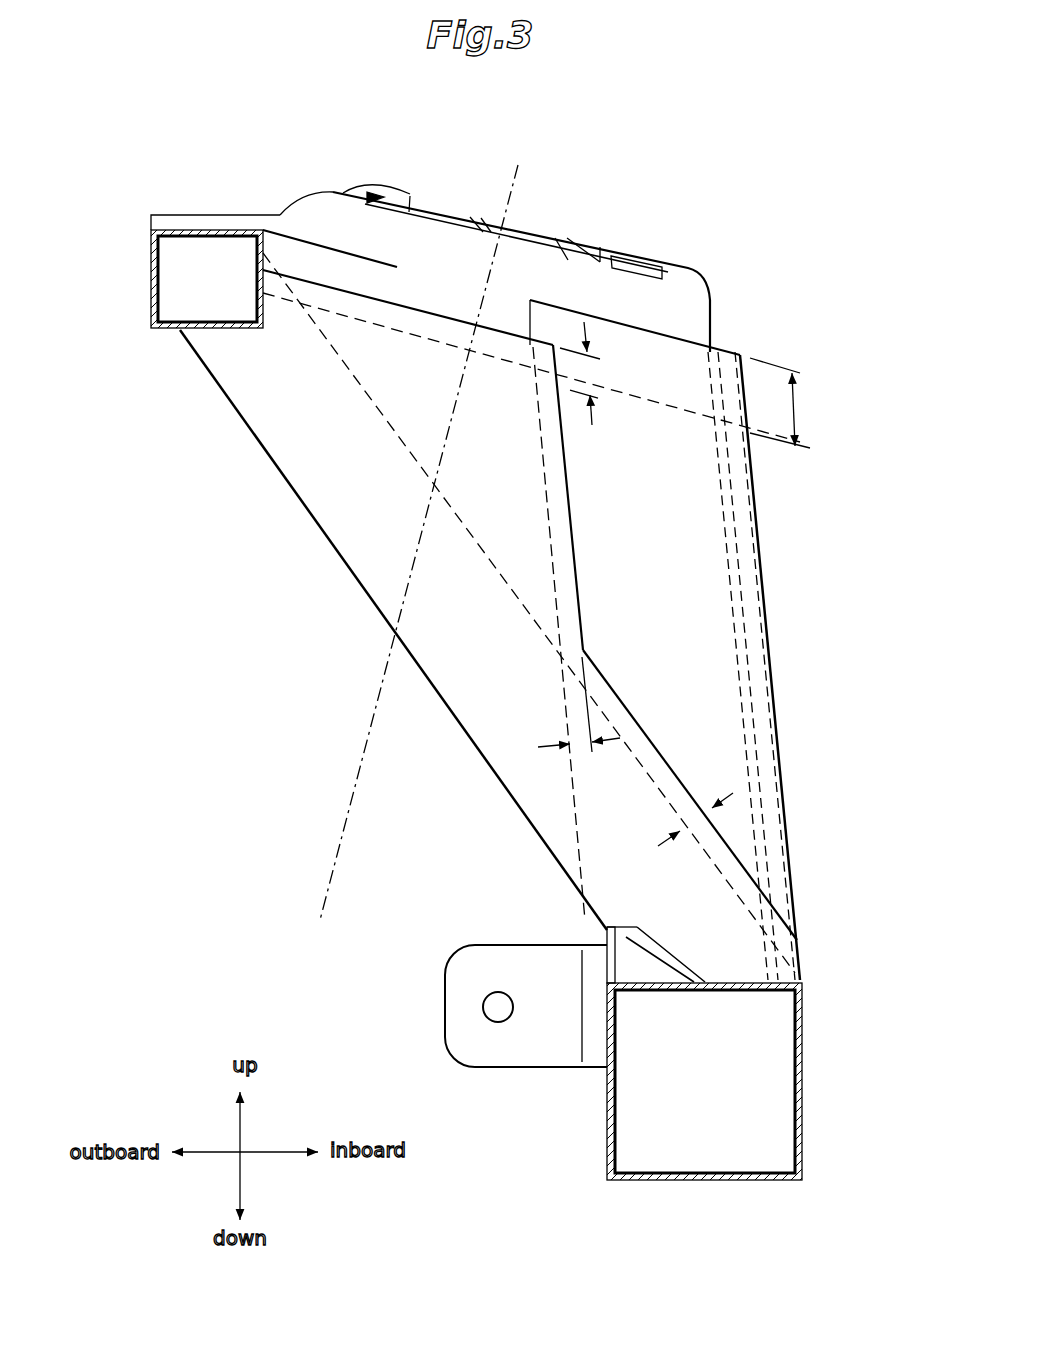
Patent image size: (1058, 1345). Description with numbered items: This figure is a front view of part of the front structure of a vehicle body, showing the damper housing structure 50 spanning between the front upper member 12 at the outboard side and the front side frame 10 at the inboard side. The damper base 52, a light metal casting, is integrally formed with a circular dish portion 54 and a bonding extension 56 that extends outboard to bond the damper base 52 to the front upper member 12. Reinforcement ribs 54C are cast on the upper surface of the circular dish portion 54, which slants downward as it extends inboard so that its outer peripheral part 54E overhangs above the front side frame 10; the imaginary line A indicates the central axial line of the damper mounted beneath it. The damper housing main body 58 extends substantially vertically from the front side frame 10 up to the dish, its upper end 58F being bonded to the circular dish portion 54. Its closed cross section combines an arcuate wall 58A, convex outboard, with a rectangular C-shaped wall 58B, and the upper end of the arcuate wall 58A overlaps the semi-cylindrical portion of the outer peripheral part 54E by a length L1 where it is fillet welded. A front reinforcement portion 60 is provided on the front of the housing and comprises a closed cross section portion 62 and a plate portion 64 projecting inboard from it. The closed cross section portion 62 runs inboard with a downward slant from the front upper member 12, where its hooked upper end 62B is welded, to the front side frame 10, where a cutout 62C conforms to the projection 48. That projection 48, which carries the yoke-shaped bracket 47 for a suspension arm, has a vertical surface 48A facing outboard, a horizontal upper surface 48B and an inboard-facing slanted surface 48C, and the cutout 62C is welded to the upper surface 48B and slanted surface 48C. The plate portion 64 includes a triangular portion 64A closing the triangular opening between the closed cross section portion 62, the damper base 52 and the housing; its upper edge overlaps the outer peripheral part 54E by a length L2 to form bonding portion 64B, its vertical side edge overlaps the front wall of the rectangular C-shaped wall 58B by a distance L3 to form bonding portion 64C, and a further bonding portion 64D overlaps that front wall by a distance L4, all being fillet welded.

The front side frame 10 is at (805, 1062).
The front upper member 12 is at (147, 288).
The bracket 47 is at (548, 1057).
The projection 48 is at (637, 926).
The vertical surface 48A is at (604, 952).
The upper surface 48B is at (622, 924).
The slanted surface 48C is at (664, 940).
The damper housing structure 50 is at (733, 307).
The damper base 52 is at (318, 187).
The circular dish portion 54 is at (702, 286).
The reinforcement ribs 54C is at (403, 199).
The outer peripheral part 54E is at (700, 327).
The bonding extension 56 is at (182, 220).
The damper housing main body 58 is at (770, 608).
The arcuate wall 58A is at (728, 573).
The rectangular C-shaped wall 58B is at (713, 518).
The upper end 58F is at (740, 354).
The front reinforcement portion 60 is at (243, 402).
The closed cross section portion 62 is at (320, 467).
The upper end 62B is at (233, 333).
The cutout 62C is at (693, 972).
The plate portion 64 is at (424, 412).
The triangular portion 64A is at (513, 464).
The bonding portion 64B is at (413, 318).
The bonding portion 64C is at (557, 463).
The bonding portion 64D is at (655, 765).
The imaginary line A is at (425, 525).
The length L1 is at (788, 403).
The length L2 is at (590, 373).
The distance L3 is at (580, 735).
The distance L4 is at (697, 812).